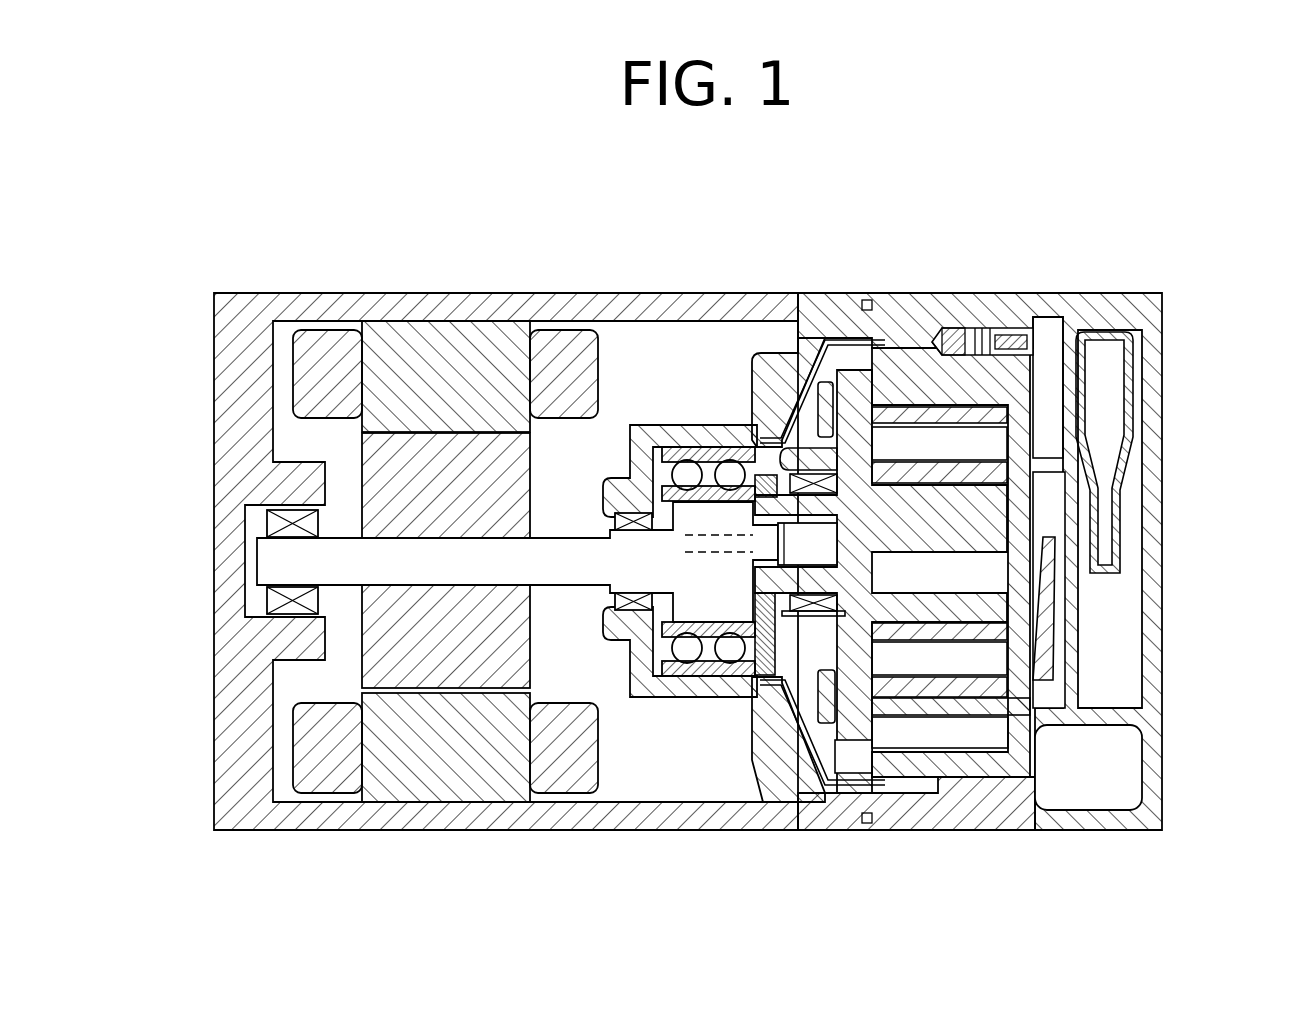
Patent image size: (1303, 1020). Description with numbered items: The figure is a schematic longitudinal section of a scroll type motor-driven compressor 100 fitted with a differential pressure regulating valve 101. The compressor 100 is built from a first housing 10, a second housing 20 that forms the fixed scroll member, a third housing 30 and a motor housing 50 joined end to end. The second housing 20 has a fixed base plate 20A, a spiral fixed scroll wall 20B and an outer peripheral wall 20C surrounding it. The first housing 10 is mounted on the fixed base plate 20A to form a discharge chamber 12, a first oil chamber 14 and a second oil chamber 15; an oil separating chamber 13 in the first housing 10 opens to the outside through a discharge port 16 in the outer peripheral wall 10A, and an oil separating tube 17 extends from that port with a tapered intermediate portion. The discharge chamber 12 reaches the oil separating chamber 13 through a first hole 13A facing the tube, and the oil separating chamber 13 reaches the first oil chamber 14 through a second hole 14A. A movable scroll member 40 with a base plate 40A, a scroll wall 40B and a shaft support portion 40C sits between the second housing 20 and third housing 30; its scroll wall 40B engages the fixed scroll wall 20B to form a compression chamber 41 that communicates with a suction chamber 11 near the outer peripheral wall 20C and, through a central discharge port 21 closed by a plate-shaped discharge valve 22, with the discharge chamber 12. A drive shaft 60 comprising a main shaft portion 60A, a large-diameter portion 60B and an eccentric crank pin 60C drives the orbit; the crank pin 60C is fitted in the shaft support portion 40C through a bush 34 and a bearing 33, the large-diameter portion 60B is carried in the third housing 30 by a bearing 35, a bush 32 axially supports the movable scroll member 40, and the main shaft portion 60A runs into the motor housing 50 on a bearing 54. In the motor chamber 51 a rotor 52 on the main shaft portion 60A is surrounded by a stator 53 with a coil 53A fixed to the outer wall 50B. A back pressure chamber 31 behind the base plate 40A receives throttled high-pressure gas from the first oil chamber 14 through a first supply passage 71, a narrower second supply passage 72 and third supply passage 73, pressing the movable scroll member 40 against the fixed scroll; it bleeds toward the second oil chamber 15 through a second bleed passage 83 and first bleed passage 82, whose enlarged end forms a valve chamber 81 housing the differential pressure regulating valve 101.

The compressor 100 is at (1122, 186).
The first housing 10 is at (1150, 295).
The outer peripheral wall 10A is at (1165, 305).
The suction chamber 11 is at (839, 765).
The discharge chamber 12 is at (1066, 602).
The oil separating chamber 13 is at (1120, 638).
The first hole 13A is at (1078, 503).
The first oil chamber 14 is at (1135, 777).
The second hole 14A is at (1093, 725).
The second oil chamber 15 is at (1053, 410).
The discharge port 16 is at (1100, 330).
The oil separating tube 17 is at (1135, 345).
The second housing 20 is at (1004, 298).
The fixed base plate 20A is at (1040, 437).
The fixed scroll wall 20B is at (1040, 700).
The outer peripheral wall 20C is at (1000, 820).
The discharge port 21 is at (1080, 548).
The discharge valve 22 is at (1046, 656).
The third housing 30 is at (848, 378).
The back pressure chamber 31 is at (750, 365).
The bush 32 is at (745, 432).
The bearing 33 is at (740, 640).
The bush 34 is at (700, 662).
The bearing 35 is at (676, 423).
The movable scroll member 40 is at (882, 398).
The base plate 40A is at (908, 728).
The scroll wall 40B is at (940, 578).
The shaft support portion 40C is at (765, 660).
The compression chamber 41 is at (921, 587).
The motor housing 50 is at (300, 300).
The outer wall 50B is at (292, 815).
The motor chamber 51 is at (558, 667).
The rotor 52 is at (432, 660).
The stator 53 is at (480, 330).
The coil 53A is at (335, 340).
The bearing 54 is at (263, 598).
The drive shaft 60 is at (258, 556).
The main shaft portion 60A is at (262, 645).
The large-diameter portion 60B is at (623, 490).
The crank pin 60C is at (640, 700).
The first supply passage 71 is at (975, 795).
The second supply passage 72 is at (905, 800).
The third supply passage 73 is at (834, 745).
The valve chamber 81 is at (1048, 320).
The first bleed passage 82 is at (835, 382).
The second bleed passage 83 is at (850, 338).
The differential pressure regulating valve 101 is at (966, 328).